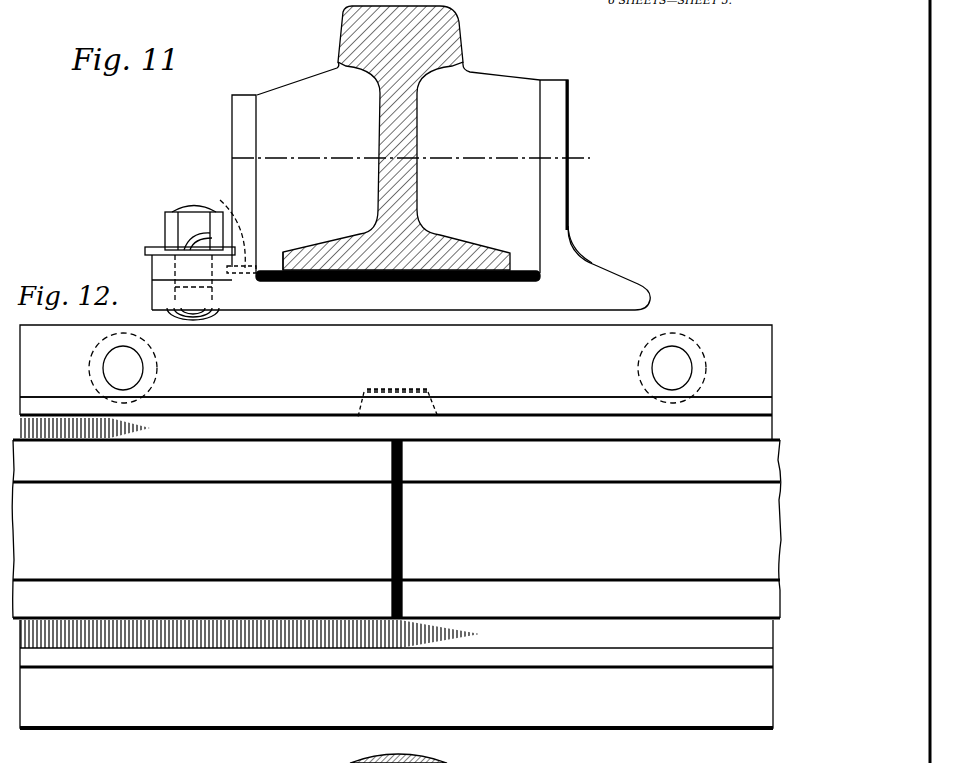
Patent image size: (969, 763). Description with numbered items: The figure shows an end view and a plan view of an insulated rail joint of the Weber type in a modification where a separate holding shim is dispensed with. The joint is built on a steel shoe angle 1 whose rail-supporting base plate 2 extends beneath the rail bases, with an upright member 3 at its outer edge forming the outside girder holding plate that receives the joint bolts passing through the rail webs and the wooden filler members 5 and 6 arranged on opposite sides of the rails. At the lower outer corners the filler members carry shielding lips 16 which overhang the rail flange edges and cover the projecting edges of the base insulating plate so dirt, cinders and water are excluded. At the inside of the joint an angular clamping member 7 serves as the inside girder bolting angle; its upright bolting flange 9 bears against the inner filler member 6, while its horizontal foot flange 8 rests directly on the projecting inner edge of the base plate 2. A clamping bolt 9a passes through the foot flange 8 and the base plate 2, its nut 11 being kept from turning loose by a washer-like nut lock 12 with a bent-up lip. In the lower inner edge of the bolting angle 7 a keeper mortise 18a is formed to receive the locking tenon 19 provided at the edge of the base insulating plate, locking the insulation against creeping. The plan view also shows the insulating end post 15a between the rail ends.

In FIG. 11, the shoe angle 1 is at (624, 268).
In FIG. 12, the shoe angle 1 is at (670, 758).
In FIG. 11, the rail-supporting base plate 2 is at (398, 290).
In FIG. 11, the upright member 3 is at (556, 120).
In FIG. 12, the upright member 3 is at (632, 658).
In FIG. 11, the filler member 5 is at (521, 84).
In FIG. 11, the filler member 6 is at (321, 87).
In FIG. 11, the angular clamping member 7 is at (398, 161).
In FIG. 12, the angular clamping member 7 is at (396, 382).
In FIG. 11, the horizontal foot flange 8 is at (165, 265).
In FIG. 11, the upright bolting flange 9 is at (246, 96).
In FIG. 12, the upright bolting flange 9 is at (270, 396).
In FIG. 11, the clamping bolt 9a is at (190, 205).
In FIG. 11, the nut 11 is at (172, 220).
In FIG. 11, the nut lock 12 is at (157, 247).
In FIG. 12, the insulating end post 15a is at (405, 529).
In FIG. 11, the shielding lip 16 is at (620, 234).
In FIG. 11, the keeper mortise 18a is at (242, 285).
In FIG. 12, the keeper mortise 18a is at (383, 388).
In FIG. 11, the locking tenon 19 is at (230, 208).
In FIG. 12, the locking tenon 19 is at (398, 388).